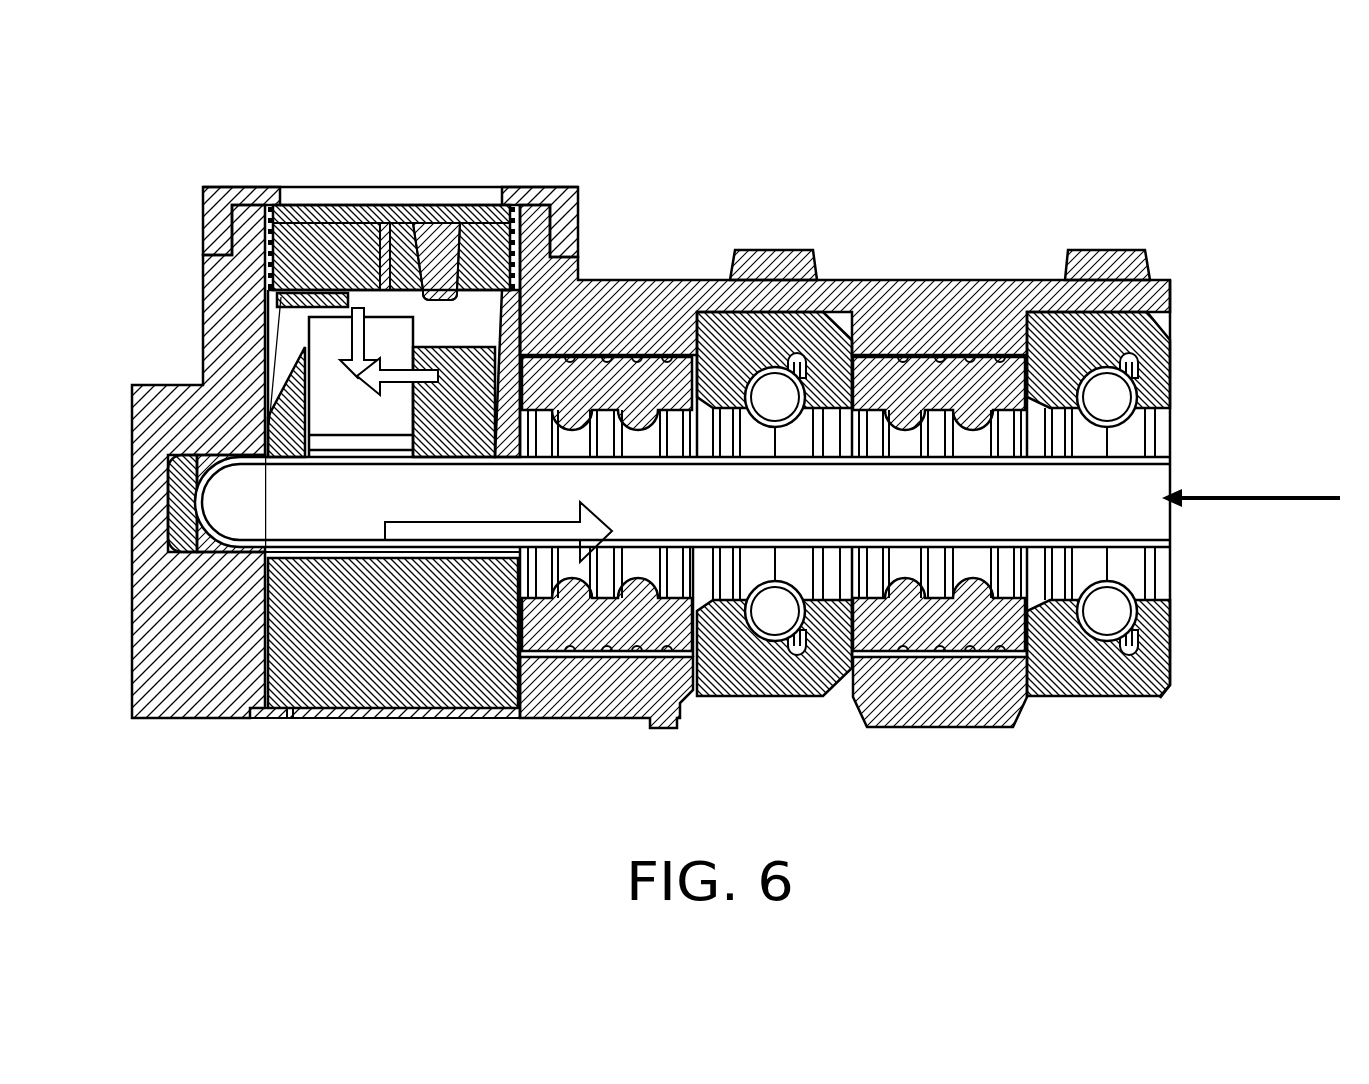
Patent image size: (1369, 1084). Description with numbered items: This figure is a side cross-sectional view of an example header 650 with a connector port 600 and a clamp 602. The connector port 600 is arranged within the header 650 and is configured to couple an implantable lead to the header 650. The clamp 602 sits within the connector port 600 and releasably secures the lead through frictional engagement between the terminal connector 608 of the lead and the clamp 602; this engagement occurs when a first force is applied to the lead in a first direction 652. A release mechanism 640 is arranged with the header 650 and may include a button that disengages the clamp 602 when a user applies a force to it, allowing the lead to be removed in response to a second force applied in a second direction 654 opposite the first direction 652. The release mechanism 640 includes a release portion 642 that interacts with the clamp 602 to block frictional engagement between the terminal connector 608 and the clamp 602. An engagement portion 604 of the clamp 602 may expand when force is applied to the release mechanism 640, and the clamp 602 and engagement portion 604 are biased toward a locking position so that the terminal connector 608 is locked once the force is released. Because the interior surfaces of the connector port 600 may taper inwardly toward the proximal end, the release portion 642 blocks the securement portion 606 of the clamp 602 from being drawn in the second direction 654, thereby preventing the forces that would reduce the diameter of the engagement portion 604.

The header 650 is at (205, 140).
The release mechanism 640 is at (412, 172).
The release portion 642 is at (447, 226).
The connector port 600 is at (232, 322).
The clamp 602 is at (252, 412).
The securement portion 606 is at (315, 393).
The terminal connector 608 is at (266, 511).
The engagement portion 604 is at (288, 560).
The second direction 654 is at (476, 558).
The first direction 652 is at (1312, 482).